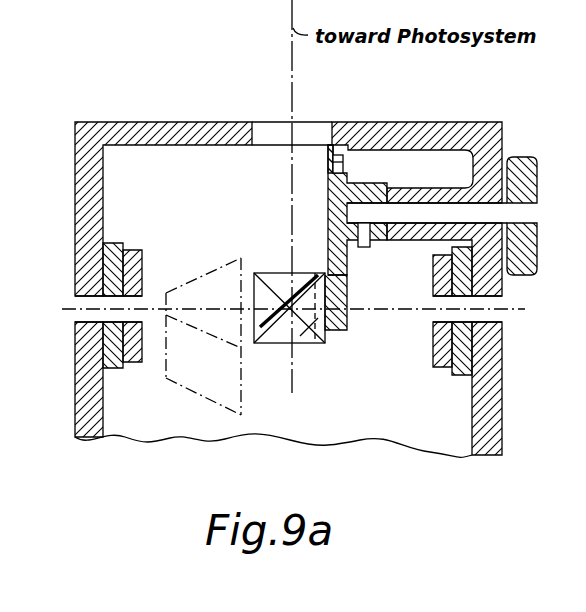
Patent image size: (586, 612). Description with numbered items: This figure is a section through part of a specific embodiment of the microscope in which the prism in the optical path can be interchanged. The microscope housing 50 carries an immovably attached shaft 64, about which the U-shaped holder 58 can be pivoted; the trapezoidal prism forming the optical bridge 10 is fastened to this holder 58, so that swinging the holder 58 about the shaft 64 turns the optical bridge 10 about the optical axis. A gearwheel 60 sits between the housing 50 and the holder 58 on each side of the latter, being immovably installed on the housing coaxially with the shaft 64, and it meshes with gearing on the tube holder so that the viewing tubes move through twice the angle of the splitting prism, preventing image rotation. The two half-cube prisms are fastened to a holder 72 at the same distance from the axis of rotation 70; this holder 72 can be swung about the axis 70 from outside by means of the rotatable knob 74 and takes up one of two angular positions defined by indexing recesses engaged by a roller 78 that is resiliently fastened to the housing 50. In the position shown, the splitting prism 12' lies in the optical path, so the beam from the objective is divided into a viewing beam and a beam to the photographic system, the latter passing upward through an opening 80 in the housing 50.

The trapezoidal prism forming the optical bridge 10 is at (198, 284).
The splitting prism 12' is at (293, 335).
The microscope housing 50 is at (190, 126).
The U-shaped holder 58 is at (136, 249).
The gearwheel 60 is at (113, 350).
The shaft 64 is at (78, 308).
The axis of rotation 70 is at (340, 217).
The holder 72 is at (337, 285).
The rotatable knob 74 is at (518, 178).
The roller 78 is at (347, 164).
The opening 80 is at (327, 138).